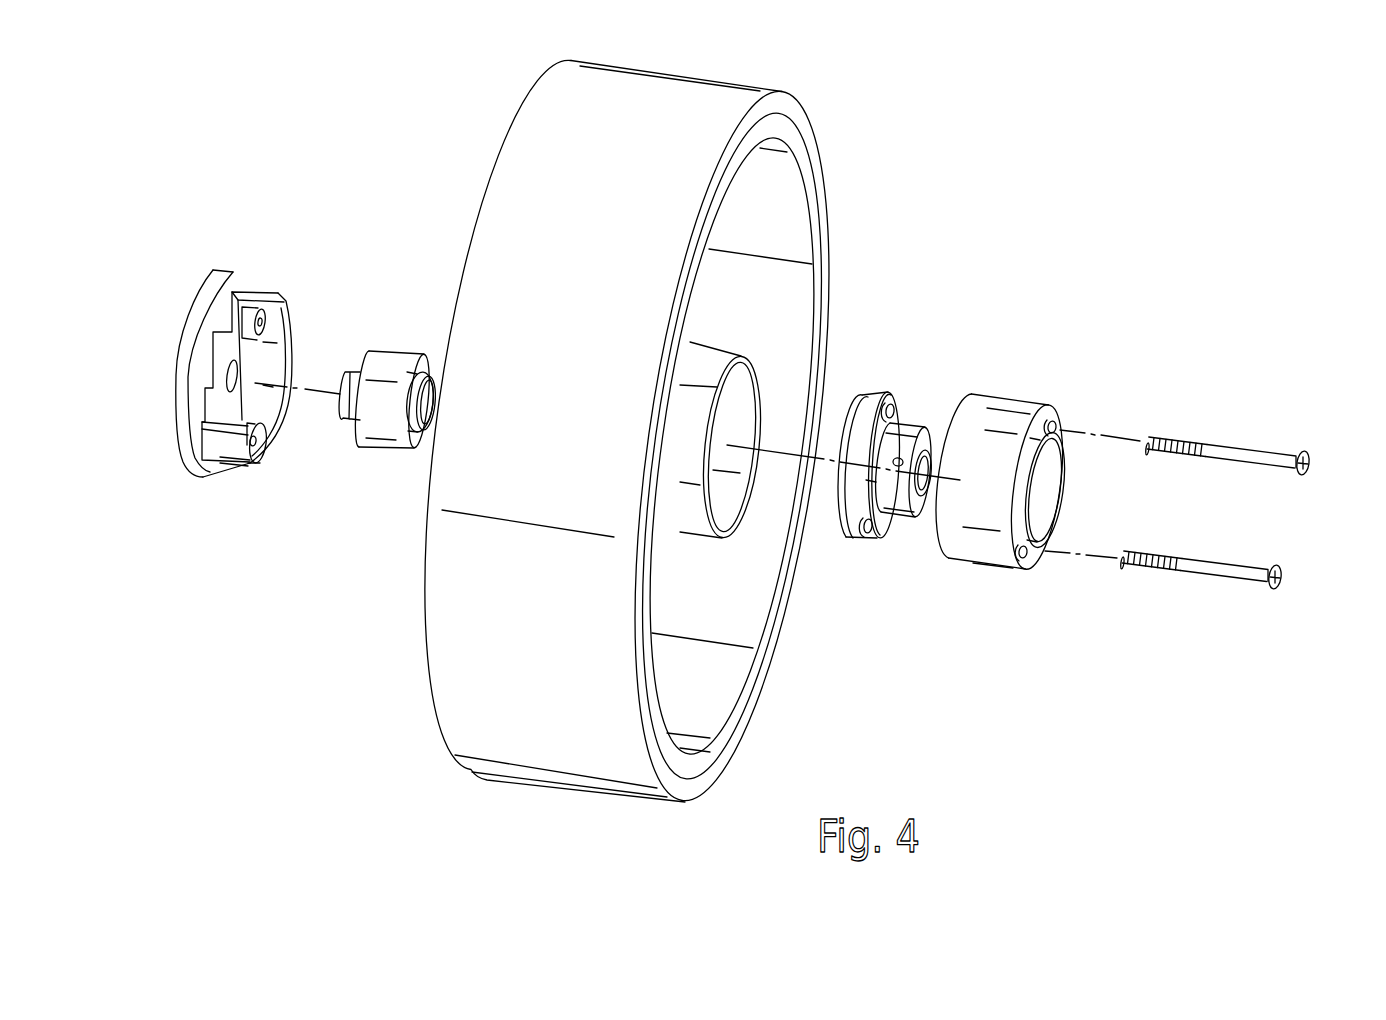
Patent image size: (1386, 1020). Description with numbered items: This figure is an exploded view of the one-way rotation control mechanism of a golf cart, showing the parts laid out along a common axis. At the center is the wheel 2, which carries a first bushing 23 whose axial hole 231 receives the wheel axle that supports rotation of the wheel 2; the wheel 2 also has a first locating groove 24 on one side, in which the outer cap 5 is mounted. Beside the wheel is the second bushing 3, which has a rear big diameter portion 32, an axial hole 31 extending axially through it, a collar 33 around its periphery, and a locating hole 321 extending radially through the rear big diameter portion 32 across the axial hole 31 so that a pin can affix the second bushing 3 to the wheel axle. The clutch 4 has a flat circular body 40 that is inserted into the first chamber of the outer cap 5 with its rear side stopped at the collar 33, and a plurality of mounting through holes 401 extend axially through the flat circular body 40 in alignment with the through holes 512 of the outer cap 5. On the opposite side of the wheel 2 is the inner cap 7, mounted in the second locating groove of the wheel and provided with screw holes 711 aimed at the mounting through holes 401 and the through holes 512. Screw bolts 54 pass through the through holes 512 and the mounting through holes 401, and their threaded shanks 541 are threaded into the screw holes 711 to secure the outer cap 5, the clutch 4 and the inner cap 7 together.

The wheel 2 is at (486, 102).
The inner cap 7 is at (232, 242).
The screw holes 711 is at (264, 318).
The first bushing 23 is at (392, 350).
The axial hole 231 is at (424, 408).
The first locating groove 24 is at (745, 415).
The clutch 4 is at (907, 466).
The flat circular body 40 is at (850, 398).
The mounting through holes 401 is at (894, 411).
The collar 33 is at (870, 481).
The second bushing 3 is at (949, 531).
The axial hole 31 is at (926, 462).
The rear big diameter portion 32 is at (905, 518).
The locating hole 321 is at (898, 467).
The outer cap 5 is at (1039, 478).
The through holes 512 is at (1055, 423).
The screw bolts 54 is at (1229, 518).
The threaded shanks 541 is at (1178, 441).